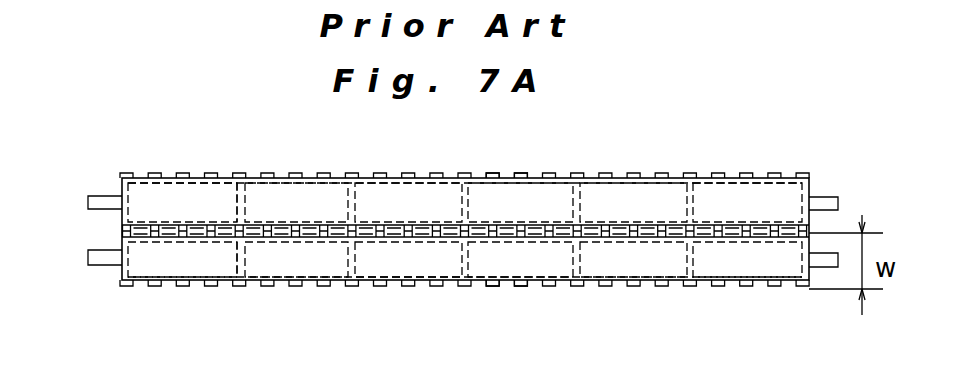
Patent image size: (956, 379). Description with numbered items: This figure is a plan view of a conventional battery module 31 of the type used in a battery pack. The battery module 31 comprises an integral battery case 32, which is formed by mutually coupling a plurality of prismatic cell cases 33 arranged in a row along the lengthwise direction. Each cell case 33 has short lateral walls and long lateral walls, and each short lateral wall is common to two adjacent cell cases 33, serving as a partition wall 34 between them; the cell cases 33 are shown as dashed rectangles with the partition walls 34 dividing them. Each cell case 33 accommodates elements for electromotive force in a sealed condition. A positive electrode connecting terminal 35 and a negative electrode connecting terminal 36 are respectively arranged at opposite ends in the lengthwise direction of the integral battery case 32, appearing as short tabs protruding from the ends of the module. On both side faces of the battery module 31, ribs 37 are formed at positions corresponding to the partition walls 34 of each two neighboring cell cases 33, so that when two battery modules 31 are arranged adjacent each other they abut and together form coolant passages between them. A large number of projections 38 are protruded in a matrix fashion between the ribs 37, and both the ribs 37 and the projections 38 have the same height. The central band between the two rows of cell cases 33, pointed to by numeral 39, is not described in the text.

The battery module 31 is at (370, 178).
The integral battery case 32 is at (283, 178).
The prismatic cell case 33 is at (166, 217).
The partition wall 34 is at (228, 323).
The positive electrode connecting terminal 35 is at (828, 201).
The negative electrode connecting terminal 36 is at (101, 203).
The rib 37 is at (470, 178).
The projection 38 is at (490, 177).
The center strip 39 is at (427, 225).